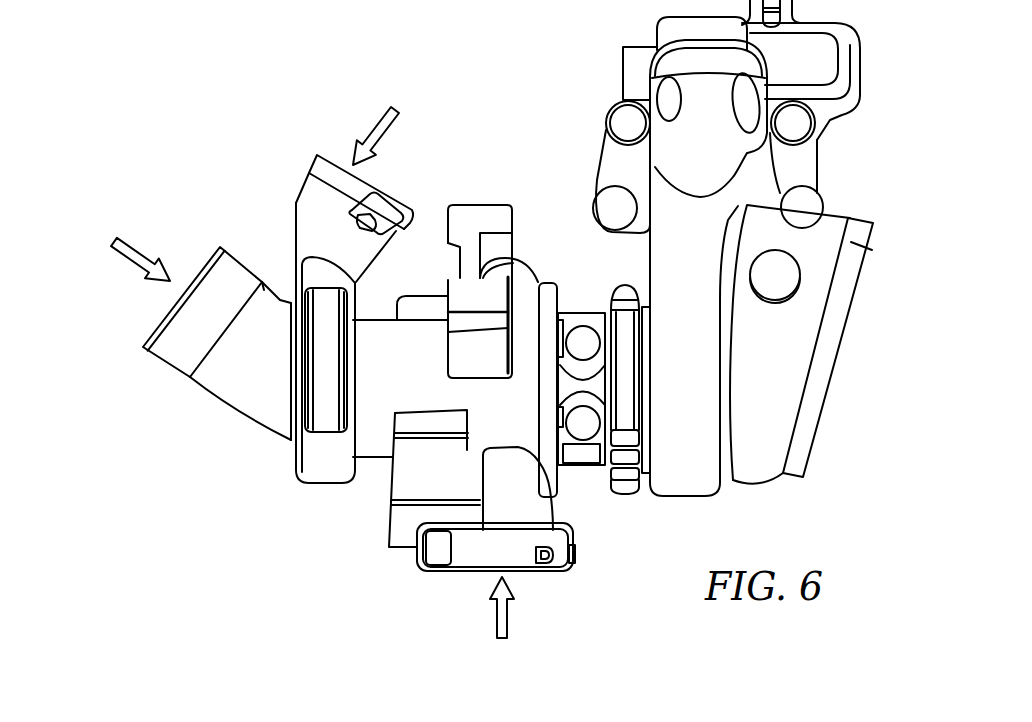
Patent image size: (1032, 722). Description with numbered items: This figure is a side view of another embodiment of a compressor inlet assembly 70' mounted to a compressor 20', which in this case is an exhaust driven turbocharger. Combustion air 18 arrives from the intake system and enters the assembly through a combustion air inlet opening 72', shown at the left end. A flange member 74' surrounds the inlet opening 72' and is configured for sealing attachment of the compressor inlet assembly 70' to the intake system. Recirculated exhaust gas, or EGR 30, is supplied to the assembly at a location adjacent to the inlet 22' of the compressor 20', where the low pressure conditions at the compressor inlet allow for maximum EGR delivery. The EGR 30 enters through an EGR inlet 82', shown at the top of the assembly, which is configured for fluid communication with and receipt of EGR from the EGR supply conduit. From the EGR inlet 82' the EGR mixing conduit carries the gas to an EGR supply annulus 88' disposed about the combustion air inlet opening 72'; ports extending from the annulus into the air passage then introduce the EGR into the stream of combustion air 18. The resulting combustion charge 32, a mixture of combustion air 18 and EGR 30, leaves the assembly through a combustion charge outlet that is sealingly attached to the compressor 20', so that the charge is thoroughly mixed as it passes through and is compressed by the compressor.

The combustion air 18 is at (143, 241).
The compressor 20' is at (715, 283).
The inlet of the compressor 22' is at (482, 368).
The EGR 30 is at (380, 130).
The combustion charge 32 is at (508, 620).
The compressor inlet assembly 70' is at (331, 373).
The combustion air inlet opening 72' is at (170, 312).
The flange member 74' is at (240, 307).
The EGR inlet 82' is at (399, 186).
The EGR supply annulus 88' is at (380, 360).